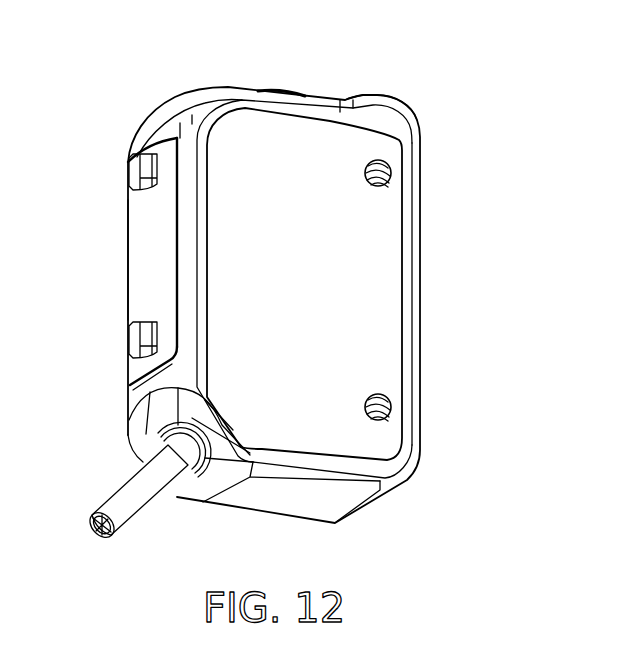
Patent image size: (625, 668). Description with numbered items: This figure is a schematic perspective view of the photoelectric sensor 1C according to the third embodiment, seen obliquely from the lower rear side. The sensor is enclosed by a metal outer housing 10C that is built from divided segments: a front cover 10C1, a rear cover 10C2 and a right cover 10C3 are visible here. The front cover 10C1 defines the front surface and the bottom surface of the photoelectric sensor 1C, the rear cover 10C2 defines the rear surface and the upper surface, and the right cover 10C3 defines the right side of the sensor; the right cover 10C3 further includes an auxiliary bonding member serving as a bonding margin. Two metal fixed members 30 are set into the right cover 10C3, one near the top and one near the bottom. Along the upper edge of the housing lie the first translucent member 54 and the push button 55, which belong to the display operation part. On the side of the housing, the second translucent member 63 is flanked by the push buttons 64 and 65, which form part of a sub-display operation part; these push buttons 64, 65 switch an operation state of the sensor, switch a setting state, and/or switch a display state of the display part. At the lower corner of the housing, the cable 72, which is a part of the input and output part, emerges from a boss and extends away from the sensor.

The photoelectric sensor 1C is at (305, 280).
The outer housing 10C is at (367, 289).
The front cover 10C1 is at (415, 255).
The rear cover 10C2 is at (190, 305).
The right cover 10C3 is at (375, 282).
The fixed member 30 is at (388, 178).
The first translucent member 54 is at (380, 120).
The push button 55 is at (283, 91).
The second translucent member 63 is at (145, 255).
The push button 64 is at (132, 172).
The push button 65 is at (132, 340).
The cable 72 is at (132, 488).